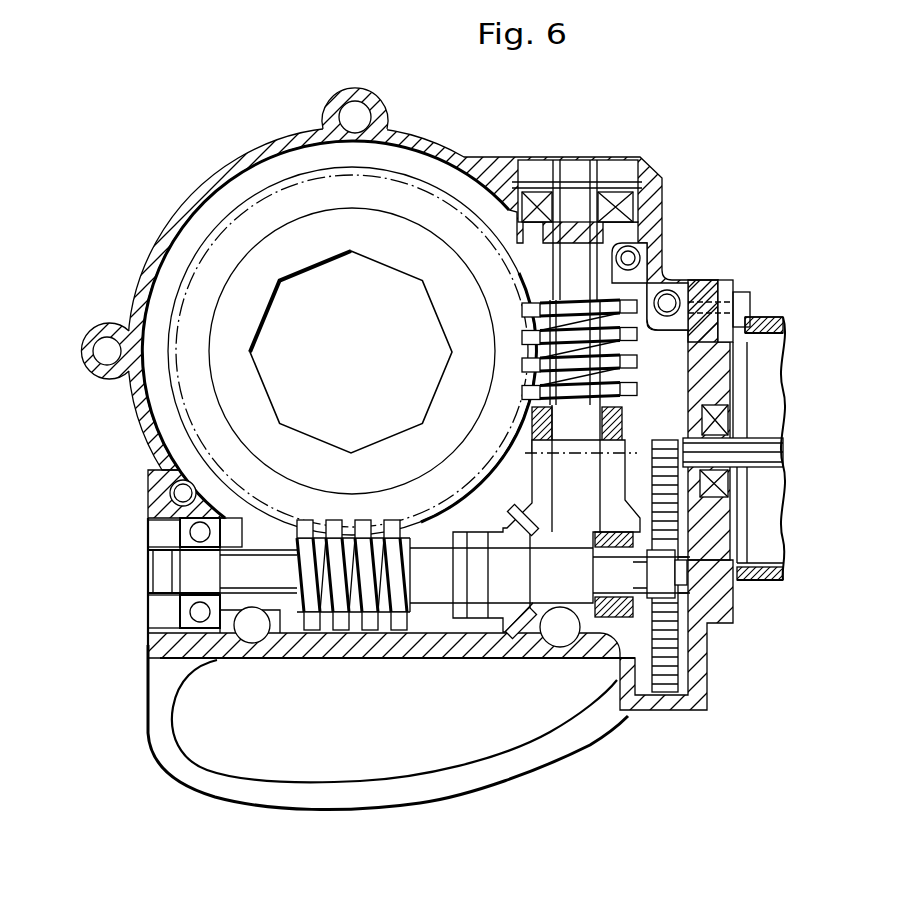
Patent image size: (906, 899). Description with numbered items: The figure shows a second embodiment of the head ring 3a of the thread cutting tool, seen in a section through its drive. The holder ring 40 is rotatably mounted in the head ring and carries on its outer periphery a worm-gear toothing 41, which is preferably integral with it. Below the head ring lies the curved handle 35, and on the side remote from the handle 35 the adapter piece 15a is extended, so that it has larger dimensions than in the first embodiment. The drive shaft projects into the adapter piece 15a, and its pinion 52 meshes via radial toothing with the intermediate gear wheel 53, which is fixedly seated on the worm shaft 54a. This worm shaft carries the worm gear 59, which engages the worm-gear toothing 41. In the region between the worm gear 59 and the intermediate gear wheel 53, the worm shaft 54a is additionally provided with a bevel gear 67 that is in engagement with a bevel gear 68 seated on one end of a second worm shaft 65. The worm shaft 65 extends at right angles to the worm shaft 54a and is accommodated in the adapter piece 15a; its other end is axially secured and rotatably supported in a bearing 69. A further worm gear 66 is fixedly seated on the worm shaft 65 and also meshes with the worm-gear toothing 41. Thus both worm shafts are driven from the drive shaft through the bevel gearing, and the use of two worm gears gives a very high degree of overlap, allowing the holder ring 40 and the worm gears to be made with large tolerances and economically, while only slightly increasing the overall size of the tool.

The head ring 3a is at (246, 136).
The adapter piece 15a is at (674, 211).
The handle 35 is at (487, 778).
The holder ring 40 is at (448, 393).
The worm-gear toothing 41 is at (453, 497).
The pinion 52 is at (670, 437).
The intermediate gear wheel 53 is at (667, 692).
The worm shaft 54a is at (258, 590).
The worm gear 59 is at (345, 612).
The second worm shaft 65 is at (580, 433).
The worm gear 66 is at (630, 354).
The bevel gear 67 is at (528, 628).
The bevel gear 68 is at (531, 514).
The bearing 69 is at (627, 207).